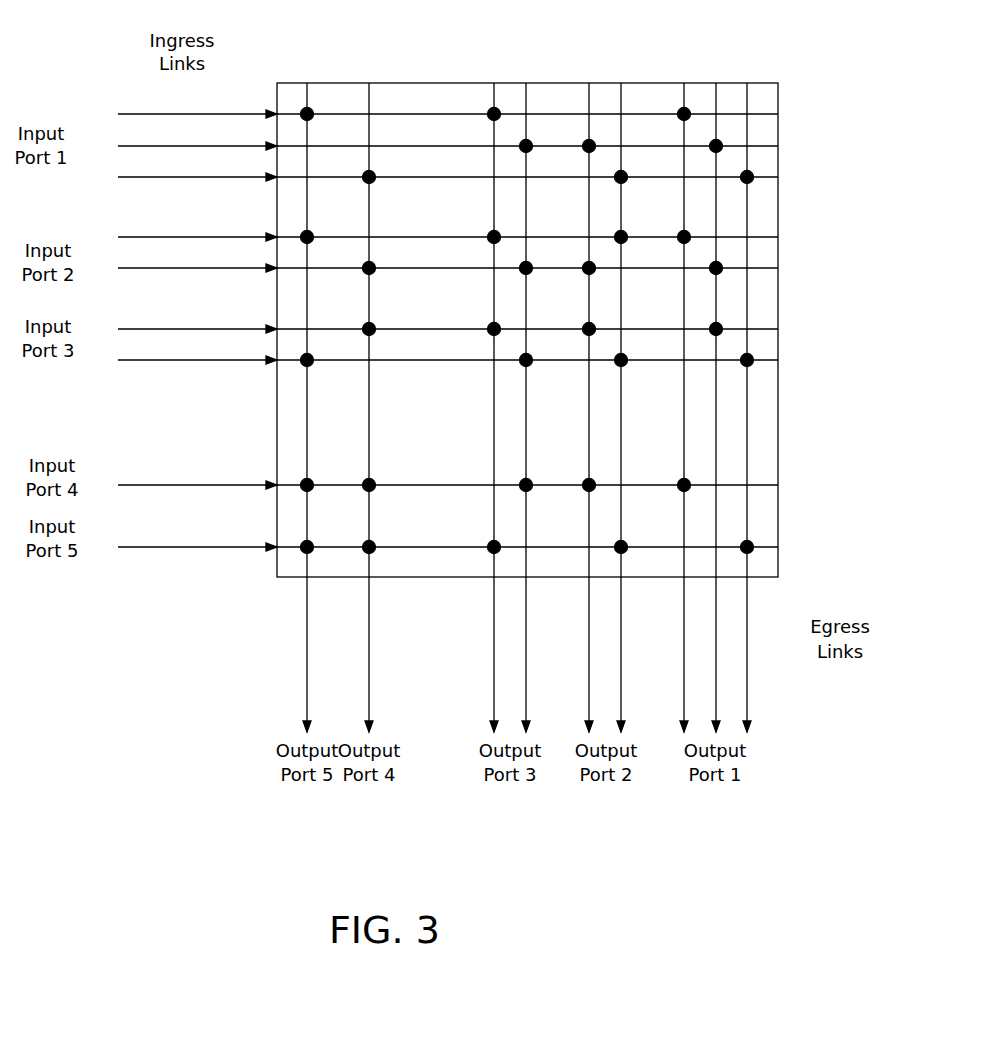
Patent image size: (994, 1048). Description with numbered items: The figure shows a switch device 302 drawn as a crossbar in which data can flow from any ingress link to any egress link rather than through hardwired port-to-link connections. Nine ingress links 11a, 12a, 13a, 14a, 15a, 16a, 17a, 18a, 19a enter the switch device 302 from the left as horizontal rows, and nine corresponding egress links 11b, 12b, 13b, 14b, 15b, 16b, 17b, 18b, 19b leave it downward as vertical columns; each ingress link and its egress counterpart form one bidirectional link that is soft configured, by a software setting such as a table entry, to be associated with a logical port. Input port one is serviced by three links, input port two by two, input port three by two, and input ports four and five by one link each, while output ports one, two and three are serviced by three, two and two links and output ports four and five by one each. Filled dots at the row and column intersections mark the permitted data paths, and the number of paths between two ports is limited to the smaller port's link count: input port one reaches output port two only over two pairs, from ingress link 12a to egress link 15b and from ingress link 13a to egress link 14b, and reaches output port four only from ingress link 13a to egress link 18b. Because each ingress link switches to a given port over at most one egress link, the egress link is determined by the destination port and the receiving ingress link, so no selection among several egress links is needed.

The switch device 302 is at (678, 82).
The ingress link 11a is at (157, 112).
The ingress link 12a is at (157, 144).
The ingress link 13a is at (157, 175).
The ingress link 14a is at (157, 235).
The ingress link 15a is at (157, 266).
The ingress link 16a is at (157, 327).
The ingress link 17a is at (157, 358).
The ingress link 18a is at (157, 483).
The ingress link 19a is at (157, 545).
The egress link 19b is at (307, 675).
The egress link 18b is at (369, 675).
The egress link 17b is at (494, 675).
The egress link 16b is at (526, 670).
The egress link 15b is at (589, 707).
The egress link 14b is at (621, 690).
The egress link 13b is at (684, 727).
The egress link 12b is at (716, 685).
The egress link 11b is at (747, 708).